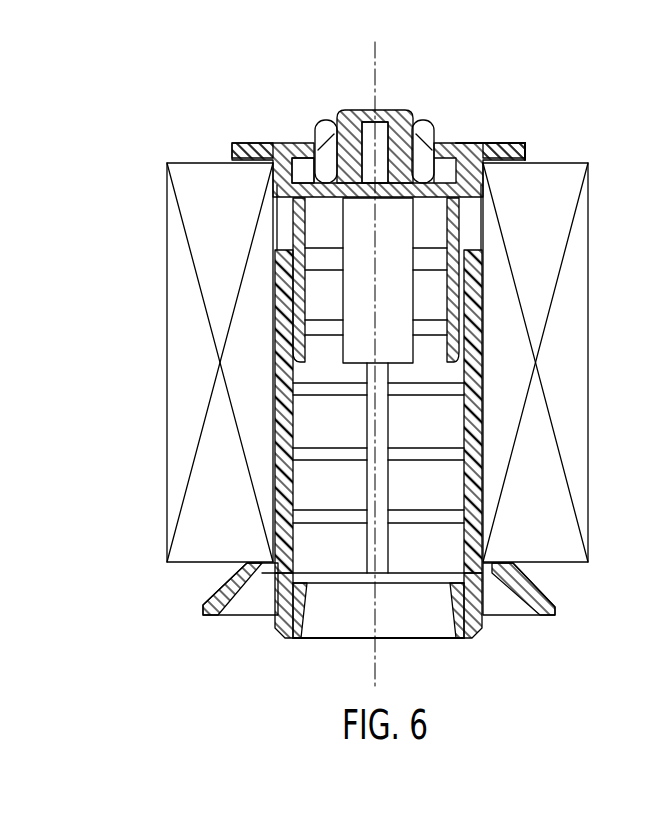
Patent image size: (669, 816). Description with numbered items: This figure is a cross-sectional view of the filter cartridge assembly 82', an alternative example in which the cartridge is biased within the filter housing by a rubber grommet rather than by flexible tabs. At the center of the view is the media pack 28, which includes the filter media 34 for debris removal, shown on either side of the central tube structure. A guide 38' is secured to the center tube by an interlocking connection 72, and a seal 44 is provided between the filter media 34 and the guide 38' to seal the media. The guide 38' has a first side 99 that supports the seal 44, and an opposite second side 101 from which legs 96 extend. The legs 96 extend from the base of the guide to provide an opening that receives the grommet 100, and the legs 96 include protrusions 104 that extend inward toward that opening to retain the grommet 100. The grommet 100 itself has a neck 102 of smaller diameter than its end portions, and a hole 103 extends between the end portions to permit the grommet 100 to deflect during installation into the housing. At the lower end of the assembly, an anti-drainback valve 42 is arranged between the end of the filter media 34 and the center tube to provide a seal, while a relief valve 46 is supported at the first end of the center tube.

The media pack 28 is at (571, 362).
The filter media 34 is at (551, 516).
The guide 38' is at (495, 99).
The anti-drainback valve 42 is at (541, 589).
The seal 44 is at (503, 164).
The relief valve 46 is at (441, 611).
The interlocking connection 72 is at (490, 279).
The filter cartridge assembly 82' is at (445, 125).
The legs 96 is at (316, 153).
The first side 99 is at (241, 172).
The grommet 100 is at (405, 107).
The second side 101 is at (527, 134).
The neck 102 is at (318, 155).
The hole 103 is at (367, 122).
The protrusions 104 is at (427, 132).